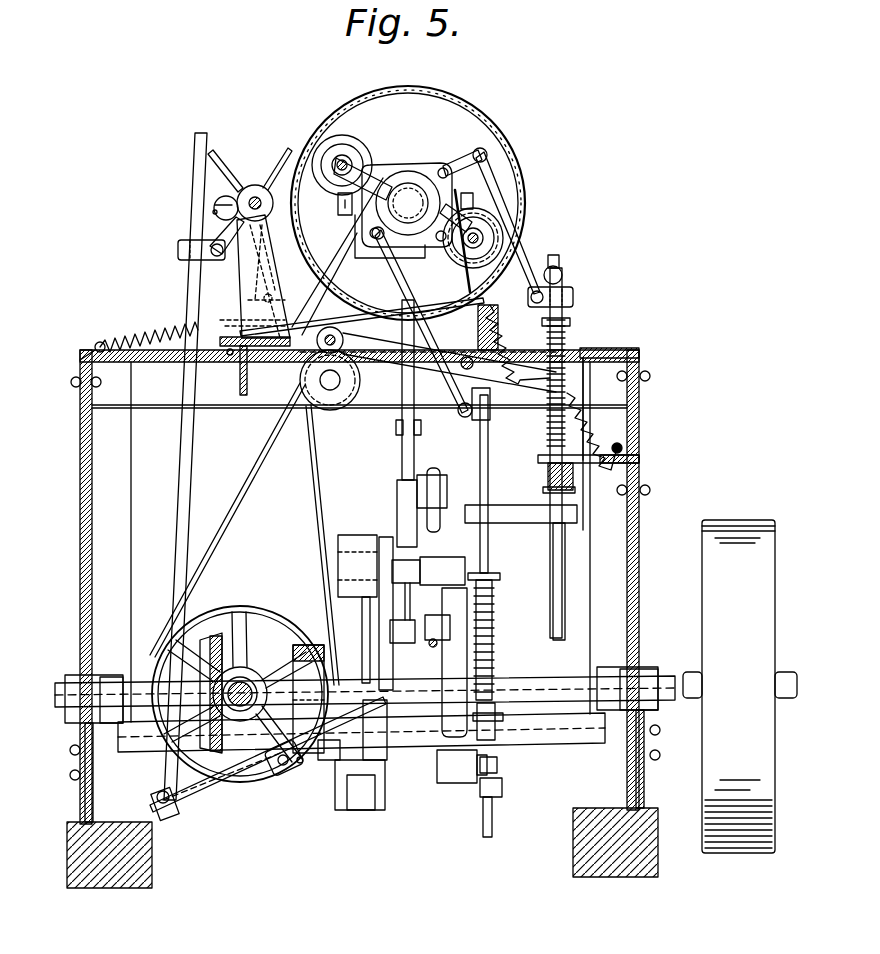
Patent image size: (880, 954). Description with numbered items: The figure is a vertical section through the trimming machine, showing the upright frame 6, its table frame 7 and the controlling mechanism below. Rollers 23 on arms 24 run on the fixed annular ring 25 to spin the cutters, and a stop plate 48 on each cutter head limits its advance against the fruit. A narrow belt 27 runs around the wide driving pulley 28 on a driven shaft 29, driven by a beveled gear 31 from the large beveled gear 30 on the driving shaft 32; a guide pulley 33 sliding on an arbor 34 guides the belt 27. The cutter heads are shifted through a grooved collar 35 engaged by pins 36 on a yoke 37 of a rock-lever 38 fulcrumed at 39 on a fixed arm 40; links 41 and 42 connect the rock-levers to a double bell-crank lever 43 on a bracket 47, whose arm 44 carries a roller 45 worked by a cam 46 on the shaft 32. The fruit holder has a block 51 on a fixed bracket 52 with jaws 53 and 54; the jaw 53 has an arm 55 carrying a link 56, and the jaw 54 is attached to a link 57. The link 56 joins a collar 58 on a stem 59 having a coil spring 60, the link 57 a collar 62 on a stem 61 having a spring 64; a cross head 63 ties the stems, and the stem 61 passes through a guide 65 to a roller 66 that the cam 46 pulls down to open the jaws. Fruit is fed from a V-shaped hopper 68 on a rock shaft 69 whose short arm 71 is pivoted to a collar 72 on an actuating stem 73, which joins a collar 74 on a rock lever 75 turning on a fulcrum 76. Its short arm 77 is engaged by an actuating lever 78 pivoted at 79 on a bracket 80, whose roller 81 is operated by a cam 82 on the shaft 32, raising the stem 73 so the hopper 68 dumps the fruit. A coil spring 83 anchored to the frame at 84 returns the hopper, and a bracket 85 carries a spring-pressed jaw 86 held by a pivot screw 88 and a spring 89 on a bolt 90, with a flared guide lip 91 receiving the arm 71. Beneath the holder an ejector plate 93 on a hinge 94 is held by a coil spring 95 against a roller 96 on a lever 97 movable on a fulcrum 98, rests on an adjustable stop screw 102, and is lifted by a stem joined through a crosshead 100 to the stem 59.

The upright frame 6 is at (80, 582).
The table frame 7 is at (610, 356).
The roller 23 is at (348, 152).
The arm 24 is at (342, 160).
The annular race way or ring 25 is at (448, 98).
The narrow belt 27 is at (210, 565).
The wide driving pulley 28 is at (262, 605).
The driven shaft 29 is at (252, 680).
The large driving beveled gear 30 is at (216, 640).
The beveled gear 31 is at (248, 660).
The driving shaft 32 is at (540, 682).
The guide pulley 33 is at (305, 395).
The arbor 34 is at (330, 392).
The loose collar 35 is at (415, 96).
The pins 36 is at (338, 206).
The yoke 37 is at (355, 235).
The rock-lever 38 is at (402, 445).
The fulcrum 39 is at (414, 430).
The fixed arm 40 is at (396, 428).
The link 41 is at (441, 520).
The link 42 is at (433, 648).
The double bell-crank lever 43 is at (397, 512).
The actuating arm 44 is at (402, 595).
The roller 45 is at (445, 557).
The cam 46 is at (470, 620).
The bracket 47 is at (362, 612).
The stop plate or gage 48 is at (406, 185).
The body or block 51 is at (505, 210).
The fixed bracket 52 is at (490, 250).
The jaw 53 is at (412, 180).
The jaw 54 is at (420, 250).
The operating arm 55 is at (484, 150).
The operating link 56 is at (476, 203).
The operating link 57 is at (412, 283).
The collar 58 is at (572, 292).
The stem 59 is at (572, 312).
The coil spring 60 is at (548, 418).
The stem 61 is at (488, 465).
The collar 62 is at (466, 418).
The cross head 63 is at (522, 523).
The coil spring 64 is at (500, 640).
The guide 65 is at (498, 720).
The roller 66 is at (460, 783).
The V-shaped hopper 68 is at (228, 165).
The rock shaft 69 is at (258, 195).
The short arm 71 is at (212, 244).
The collar 72 is at (178, 250).
The actuating stem 73 is at (195, 460).
The collar 74 is at (168, 820).
The rock lever 75 is at (232, 790).
The fulcrum 76 is at (283, 790).
The short arm 77 is at (385, 700).
The actuating lever 78 is at (370, 730).
The pivot 79 is at (385, 788).
The bracket 80 is at (365, 810).
The roller 81 is at (312, 770).
The cam 82 is at (308, 645).
The coil spring 83 is at (110, 316).
The frame attachment 84 is at (92, 352).
The bracket 85 is at (222, 200).
The spring pressed jaw 86 is at (240, 262).
The pivot screw 88 is at (235, 322).
The spring 89 is at (275, 265).
The bolt 90 is at (272, 255).
The guide lip 91 is at (220, 204).
The ejector plate 93 is at (440, 316).
The hinge or axis 94 is at (230, 357).
The coil spring 95 is at (600, 430).
The roller 96 is at (343, 342).
The lever 97 is at (592, 375).
The fulcrum 98 is at (463, 372).
The crosshead 100 is at (560, 273).
The adjustable stop screw 102 is at (503, 318).